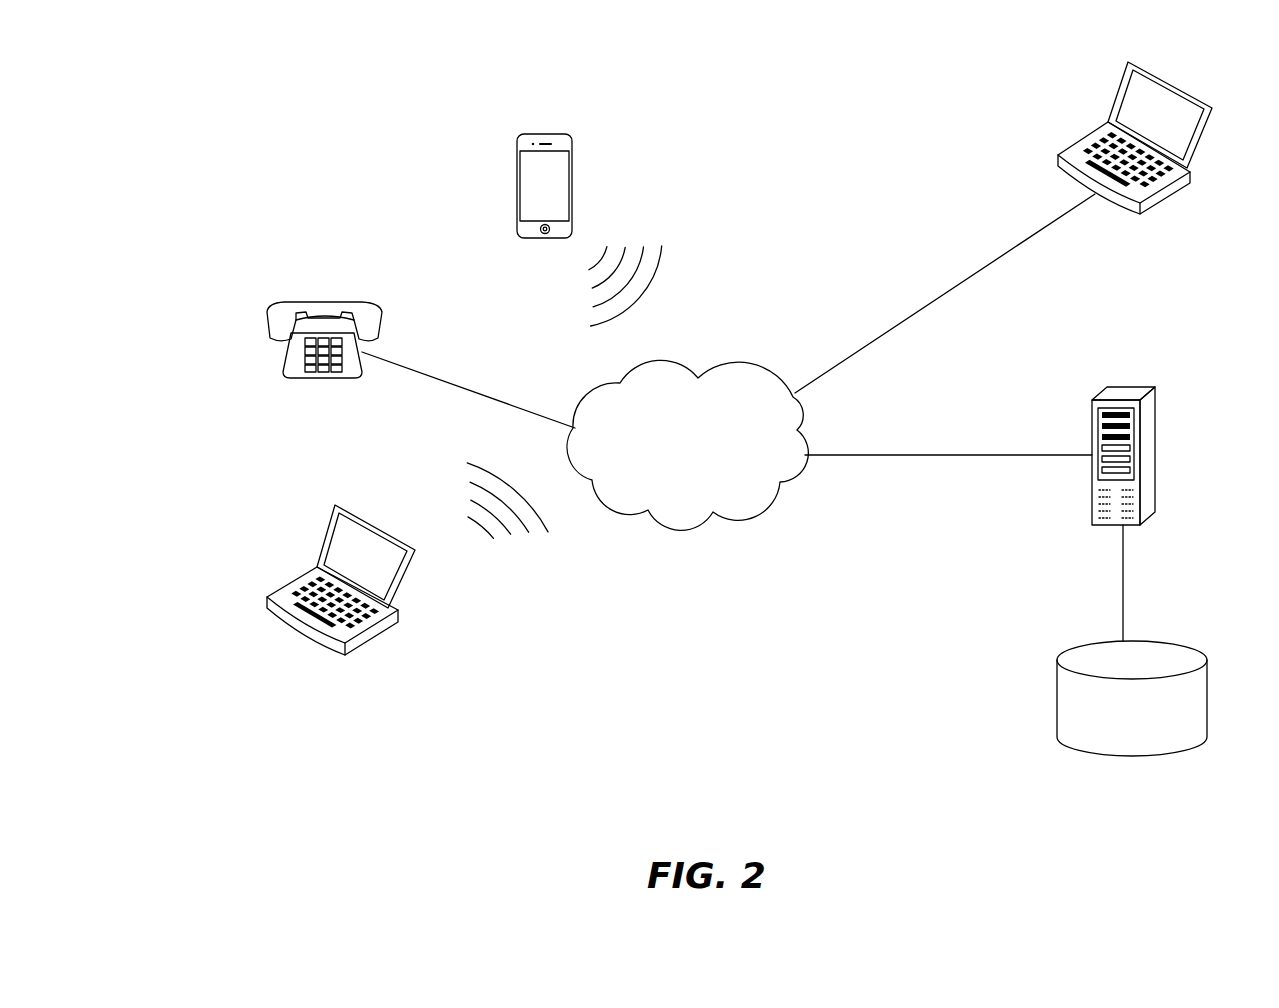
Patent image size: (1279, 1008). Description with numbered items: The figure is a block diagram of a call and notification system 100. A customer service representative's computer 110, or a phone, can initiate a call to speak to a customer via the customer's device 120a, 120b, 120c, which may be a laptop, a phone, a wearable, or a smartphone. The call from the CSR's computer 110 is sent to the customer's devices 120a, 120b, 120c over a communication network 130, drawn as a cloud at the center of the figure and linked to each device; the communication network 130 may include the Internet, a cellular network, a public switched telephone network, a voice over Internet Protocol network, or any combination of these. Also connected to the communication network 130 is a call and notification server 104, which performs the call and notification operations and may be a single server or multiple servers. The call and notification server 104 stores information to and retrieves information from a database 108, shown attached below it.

The call and notification system 100 is at (168, 116).
The CSR's computer 110 is at (1187, 83).
The call and notification server 104 is at (1134, 383).
The database 108 is at (1190, 646).
The communication network 130 is at (752, 365).
The customer's device 120a is at (563, 137).
The customer's device 120b is at (375, 303).
The customer's device 120c is at (415, 583).